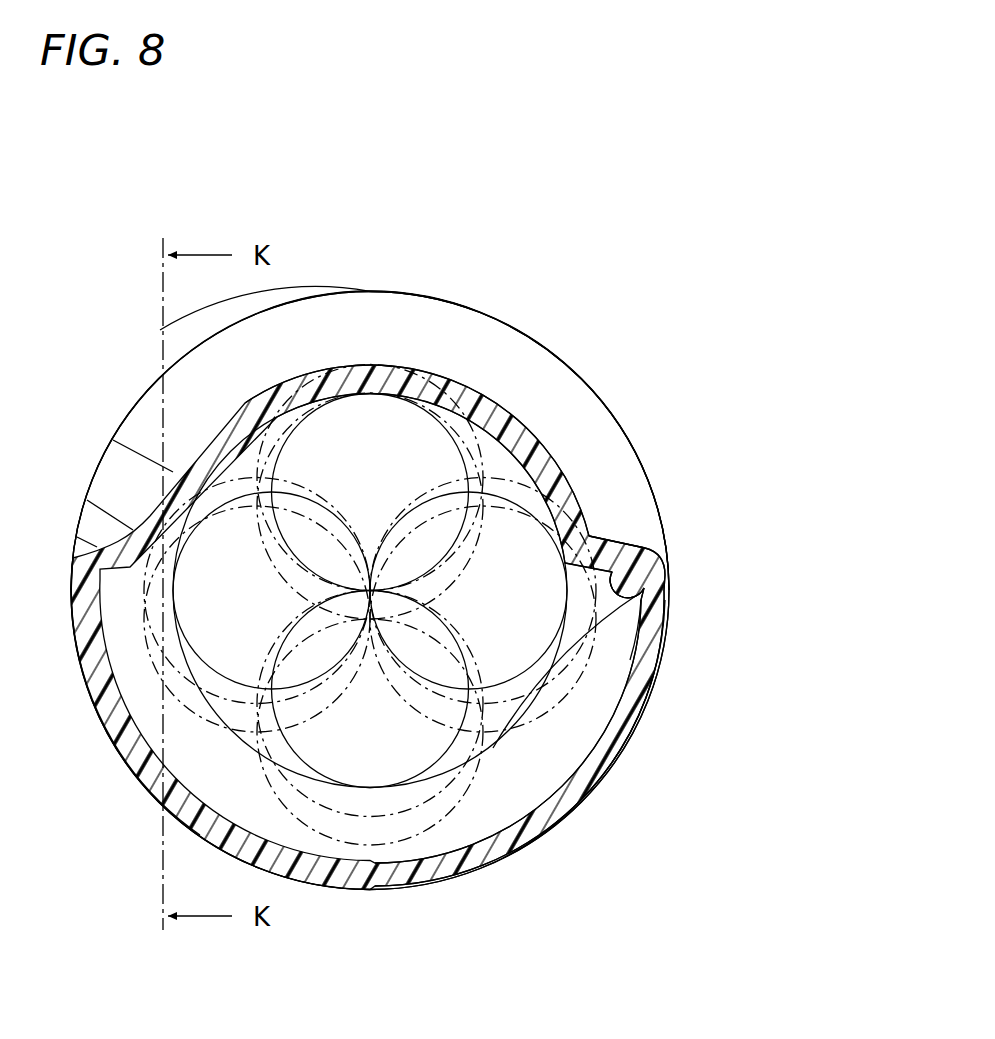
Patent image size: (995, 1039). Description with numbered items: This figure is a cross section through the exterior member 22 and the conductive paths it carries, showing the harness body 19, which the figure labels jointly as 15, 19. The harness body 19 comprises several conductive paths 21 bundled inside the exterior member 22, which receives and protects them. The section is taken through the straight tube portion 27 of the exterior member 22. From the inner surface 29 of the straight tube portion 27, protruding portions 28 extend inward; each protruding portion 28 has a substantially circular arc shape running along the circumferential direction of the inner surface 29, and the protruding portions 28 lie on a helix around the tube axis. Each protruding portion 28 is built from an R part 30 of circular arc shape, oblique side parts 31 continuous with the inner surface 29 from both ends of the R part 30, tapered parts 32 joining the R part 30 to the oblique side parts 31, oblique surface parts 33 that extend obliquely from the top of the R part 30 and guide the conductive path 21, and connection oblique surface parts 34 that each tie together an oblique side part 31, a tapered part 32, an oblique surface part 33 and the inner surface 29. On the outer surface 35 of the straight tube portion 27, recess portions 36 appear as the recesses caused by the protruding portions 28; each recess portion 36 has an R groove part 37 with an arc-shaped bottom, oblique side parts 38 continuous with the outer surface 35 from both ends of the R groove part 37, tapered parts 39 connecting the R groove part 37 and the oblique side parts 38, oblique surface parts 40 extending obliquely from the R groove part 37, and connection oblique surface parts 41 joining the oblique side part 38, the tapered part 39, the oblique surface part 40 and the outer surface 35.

The corrugated tube 15 is at (543, 179).
The harness body 19 is at (370, 591).
The conductive path 21 is at (494, 752).
The exterior member 22 is at (127, 771).
The straight tube portion 27 is at (566, 822).
The protruding portion 28 is at (552, 452).
The inner surface 29 is at (597, 740).
The R part 30 is at (598, 485).
The oblique side part 31 is at (640, 595).
The tapered part 32 is at (638, 648).
The oblique surface part 33 is at (355, 320).
The connection oblique surface part 34 is at (635, 505).
The outer surface 35 is at (593, 790).
The recess portion 36 is at (490, 340).
The R groove part 37 is at (545, 368).
The oblique side part 38 is at (610, 545).
The tapered part 39 is at (605, 525).
The oblique surface part 40 is at (430, 330).
The connection oblique surface part 41 is at (620, 523).